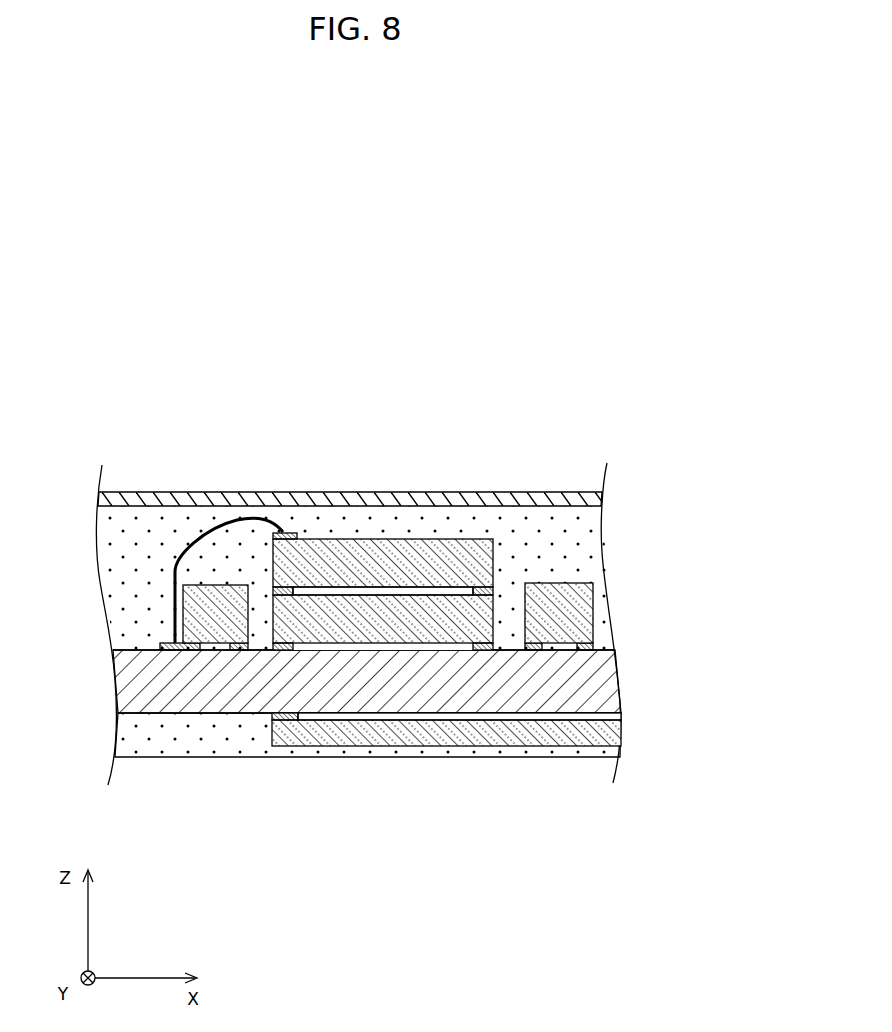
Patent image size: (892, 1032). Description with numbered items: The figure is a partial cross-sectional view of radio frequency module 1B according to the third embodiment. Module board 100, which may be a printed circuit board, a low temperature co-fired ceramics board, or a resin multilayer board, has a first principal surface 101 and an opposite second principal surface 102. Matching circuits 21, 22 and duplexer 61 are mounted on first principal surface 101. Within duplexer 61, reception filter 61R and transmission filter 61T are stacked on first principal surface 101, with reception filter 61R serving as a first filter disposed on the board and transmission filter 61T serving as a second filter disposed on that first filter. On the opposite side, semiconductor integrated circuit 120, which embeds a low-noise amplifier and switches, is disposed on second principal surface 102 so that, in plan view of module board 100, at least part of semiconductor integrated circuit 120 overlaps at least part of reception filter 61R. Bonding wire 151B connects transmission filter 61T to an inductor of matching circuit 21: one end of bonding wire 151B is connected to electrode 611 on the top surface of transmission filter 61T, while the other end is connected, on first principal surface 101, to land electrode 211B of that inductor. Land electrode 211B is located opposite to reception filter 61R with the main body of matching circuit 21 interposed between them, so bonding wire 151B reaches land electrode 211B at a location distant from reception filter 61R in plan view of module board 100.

The radio frequency module 1B is at (320, 588).
The matching circuit 21 is at (224, 650).
The matching circuit 22 is at (549, 583).
The duplexer 61 is at (383, 534).
The transmission filter 61T is at (352, 538).
The reception filter 61R is at (392, 600).
The electrode 611 is at (295, 494).
The module board 100 is at (134, 682).
The first principal surface 101 is at (143, 650).
The second principal surface 102 is at (143, 713).
The semiconductor integrated circuit 120 is at (405, 746).
The bonding wire 151B is at (232, 519).
The land electrode 211B is at (164, 642).